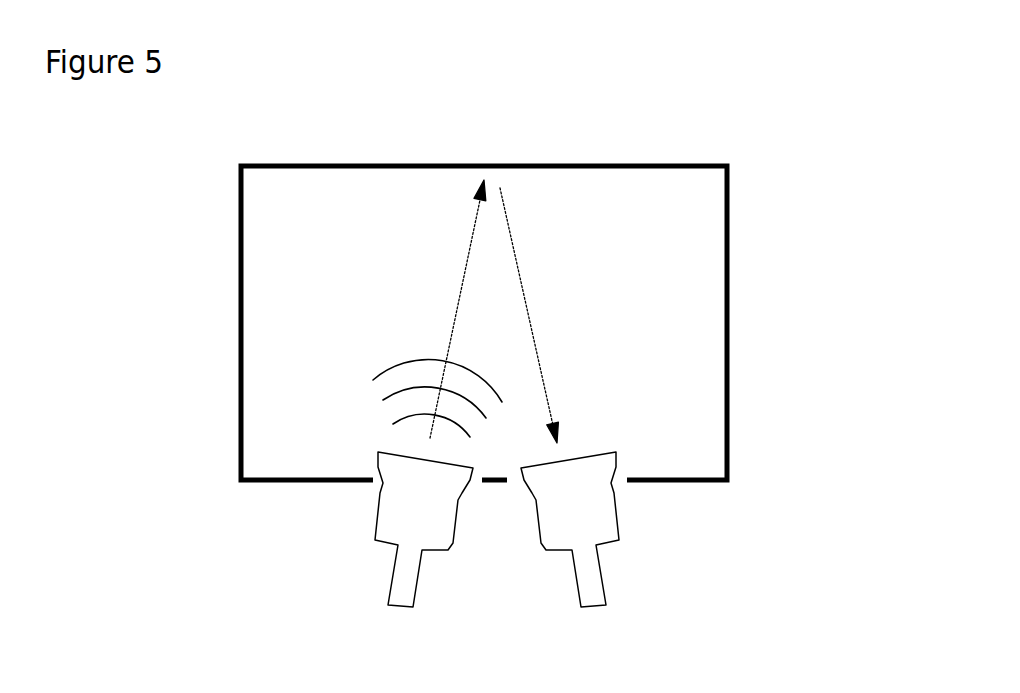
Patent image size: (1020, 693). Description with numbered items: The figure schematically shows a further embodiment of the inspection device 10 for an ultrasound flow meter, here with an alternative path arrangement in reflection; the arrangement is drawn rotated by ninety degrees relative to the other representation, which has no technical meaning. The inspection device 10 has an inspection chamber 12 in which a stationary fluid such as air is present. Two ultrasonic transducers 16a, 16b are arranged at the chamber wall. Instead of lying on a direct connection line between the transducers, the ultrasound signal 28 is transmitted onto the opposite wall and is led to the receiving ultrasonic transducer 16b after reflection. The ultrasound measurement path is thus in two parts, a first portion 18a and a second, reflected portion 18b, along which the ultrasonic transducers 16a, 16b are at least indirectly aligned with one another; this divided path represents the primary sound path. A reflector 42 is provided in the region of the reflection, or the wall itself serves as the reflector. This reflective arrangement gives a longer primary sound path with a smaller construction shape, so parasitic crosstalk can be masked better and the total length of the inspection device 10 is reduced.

The inspection device 10 is at (790, 167).
The inspection chamber 12 is at (272, 250).
The ultrasonic transducer 16a is at (398, 523).
The ultrasonic transducer 16b is at (583, 517).
The first portion of the ultrasound measurement path 18a is at (455, 308).
The second, reflected portion of the ultrasound measurement path 18b is at (527, 308).
The ultrasound signal 28 is at (400, 368).
The reflector 42 is at (493, 177).